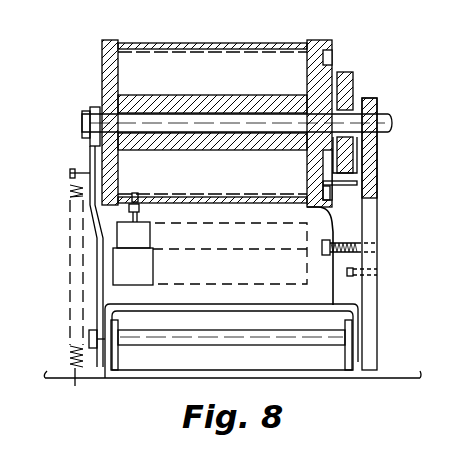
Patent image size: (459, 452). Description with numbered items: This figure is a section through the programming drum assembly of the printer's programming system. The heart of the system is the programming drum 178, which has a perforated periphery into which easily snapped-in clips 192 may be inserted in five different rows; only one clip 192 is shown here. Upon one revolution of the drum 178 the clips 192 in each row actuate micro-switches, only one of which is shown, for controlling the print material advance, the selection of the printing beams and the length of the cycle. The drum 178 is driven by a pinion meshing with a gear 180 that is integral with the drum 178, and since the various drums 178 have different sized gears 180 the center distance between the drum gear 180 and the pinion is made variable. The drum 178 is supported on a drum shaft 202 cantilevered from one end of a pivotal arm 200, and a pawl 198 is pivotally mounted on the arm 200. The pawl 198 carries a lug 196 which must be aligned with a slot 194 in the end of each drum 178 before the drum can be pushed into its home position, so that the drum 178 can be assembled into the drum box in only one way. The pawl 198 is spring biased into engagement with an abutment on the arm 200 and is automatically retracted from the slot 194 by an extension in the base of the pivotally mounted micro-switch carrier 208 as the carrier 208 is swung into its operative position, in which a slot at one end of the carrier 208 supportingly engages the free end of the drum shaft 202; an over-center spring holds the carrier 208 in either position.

The programming drum 178 is at (251, 44).
The gear 180 is at (345, 88).
The drum shaft 202 is at (84, 127).
The pivotal arm 200 is at (370, 168).
The lug 196 is at (357, 183).
The pawl 198 is at (343, 218).
The clip 192 is at (138, 202).
The slot 194 is at (120, 269).
The micro-switch carrier 208 is at (97, 247).